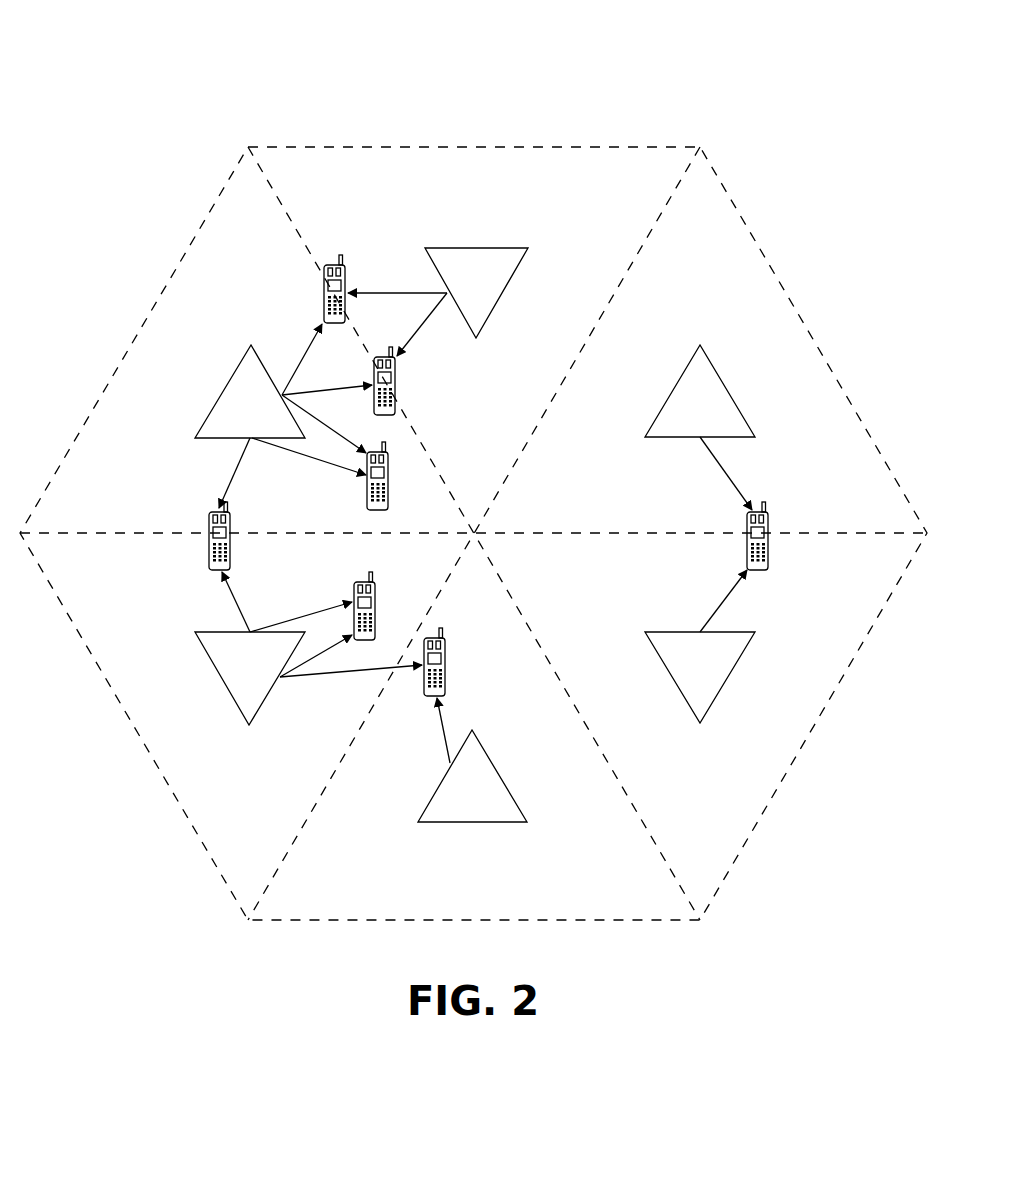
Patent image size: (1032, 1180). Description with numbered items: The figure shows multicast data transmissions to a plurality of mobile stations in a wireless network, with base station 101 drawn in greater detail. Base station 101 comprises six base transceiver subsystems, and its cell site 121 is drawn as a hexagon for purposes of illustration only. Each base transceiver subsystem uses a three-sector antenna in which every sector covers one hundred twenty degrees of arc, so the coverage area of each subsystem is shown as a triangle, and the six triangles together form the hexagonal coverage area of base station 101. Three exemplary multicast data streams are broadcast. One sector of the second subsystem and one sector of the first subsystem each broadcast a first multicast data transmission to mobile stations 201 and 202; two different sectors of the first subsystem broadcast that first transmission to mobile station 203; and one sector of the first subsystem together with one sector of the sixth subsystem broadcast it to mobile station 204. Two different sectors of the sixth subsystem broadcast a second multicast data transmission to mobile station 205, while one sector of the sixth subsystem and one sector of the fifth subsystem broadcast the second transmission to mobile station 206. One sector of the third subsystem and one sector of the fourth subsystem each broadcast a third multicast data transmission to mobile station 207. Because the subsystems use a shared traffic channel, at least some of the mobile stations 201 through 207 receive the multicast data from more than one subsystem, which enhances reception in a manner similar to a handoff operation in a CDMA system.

The base station 101 is at (224, 73).
The cell site 121 is at (482, 147).
The mobile station 201 is at (322, 304).
The mobile station 202 is at (396, 386).
The mobile station 203 is at (366, 493).
The mobile station 204 is at (208, 522).
The mobile station 205 is at (353, 590).
The mobile station 206 is at (446, 668).
The mobile station 207 is at (768, 527).